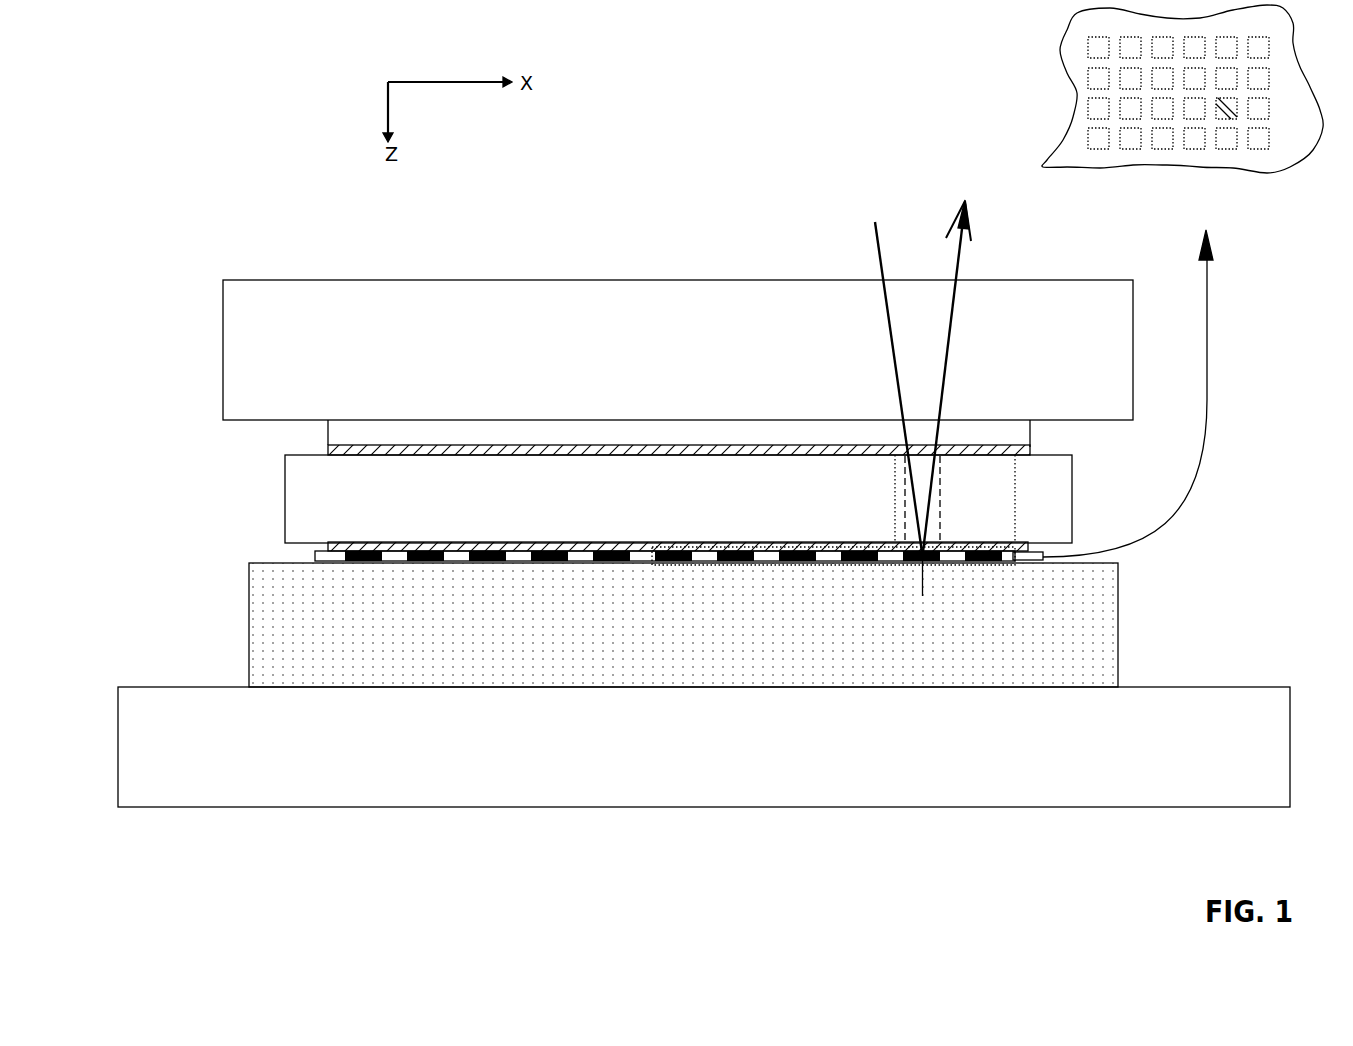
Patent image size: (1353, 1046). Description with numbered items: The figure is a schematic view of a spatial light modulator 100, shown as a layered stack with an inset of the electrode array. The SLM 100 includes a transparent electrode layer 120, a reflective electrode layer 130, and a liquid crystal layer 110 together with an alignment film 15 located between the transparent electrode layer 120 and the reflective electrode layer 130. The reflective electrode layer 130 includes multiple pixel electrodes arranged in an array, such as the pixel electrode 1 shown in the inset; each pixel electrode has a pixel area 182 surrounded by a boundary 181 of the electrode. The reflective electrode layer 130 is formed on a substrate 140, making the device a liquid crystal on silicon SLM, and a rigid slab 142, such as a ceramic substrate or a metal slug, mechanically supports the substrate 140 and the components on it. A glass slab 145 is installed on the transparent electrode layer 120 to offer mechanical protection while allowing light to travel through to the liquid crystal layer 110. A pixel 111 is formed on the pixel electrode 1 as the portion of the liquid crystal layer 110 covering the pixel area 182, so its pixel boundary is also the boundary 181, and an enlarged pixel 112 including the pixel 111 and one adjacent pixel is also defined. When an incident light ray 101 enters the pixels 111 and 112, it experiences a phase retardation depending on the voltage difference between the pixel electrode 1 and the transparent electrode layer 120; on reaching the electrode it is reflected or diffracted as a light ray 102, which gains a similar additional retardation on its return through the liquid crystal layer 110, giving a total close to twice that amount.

The spatial light modulator 100 is at (113, 195).
The incident light ray 101 is at (888, 375).
The reflected or diffraction light ray 102 is at (962, 378).
The liquid crystal layer 110 is at (715, 499).
The pixel 111 is at (937, 515).
The enlarged pixel 112 is at (1016, 470).
The transparent electrode layer 120 is at (333, 433).
The reflective electrode layer 130 is at (313, 554).
The substrate 140 is at (248, 623).
The rigid slab 142 is at (704, 747).
The glass slab 145 is at (678, 350).
The alignment film 15 is at (330, 547).
The pixel electrode 1 is at (1237, 115).
The boundary 181 is at (1220, 100).
The pixel area 182 is at (1235, 107).